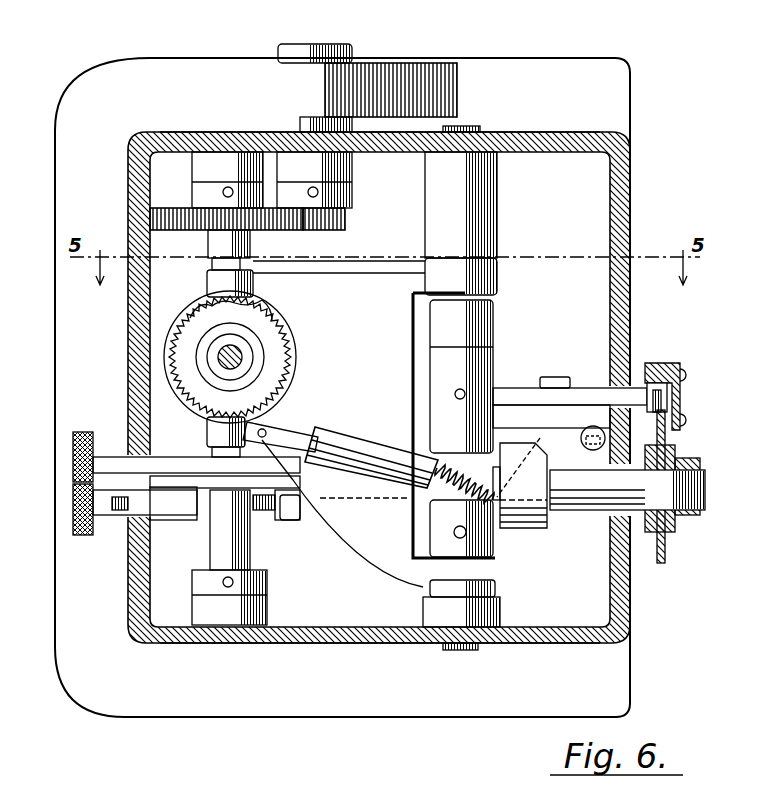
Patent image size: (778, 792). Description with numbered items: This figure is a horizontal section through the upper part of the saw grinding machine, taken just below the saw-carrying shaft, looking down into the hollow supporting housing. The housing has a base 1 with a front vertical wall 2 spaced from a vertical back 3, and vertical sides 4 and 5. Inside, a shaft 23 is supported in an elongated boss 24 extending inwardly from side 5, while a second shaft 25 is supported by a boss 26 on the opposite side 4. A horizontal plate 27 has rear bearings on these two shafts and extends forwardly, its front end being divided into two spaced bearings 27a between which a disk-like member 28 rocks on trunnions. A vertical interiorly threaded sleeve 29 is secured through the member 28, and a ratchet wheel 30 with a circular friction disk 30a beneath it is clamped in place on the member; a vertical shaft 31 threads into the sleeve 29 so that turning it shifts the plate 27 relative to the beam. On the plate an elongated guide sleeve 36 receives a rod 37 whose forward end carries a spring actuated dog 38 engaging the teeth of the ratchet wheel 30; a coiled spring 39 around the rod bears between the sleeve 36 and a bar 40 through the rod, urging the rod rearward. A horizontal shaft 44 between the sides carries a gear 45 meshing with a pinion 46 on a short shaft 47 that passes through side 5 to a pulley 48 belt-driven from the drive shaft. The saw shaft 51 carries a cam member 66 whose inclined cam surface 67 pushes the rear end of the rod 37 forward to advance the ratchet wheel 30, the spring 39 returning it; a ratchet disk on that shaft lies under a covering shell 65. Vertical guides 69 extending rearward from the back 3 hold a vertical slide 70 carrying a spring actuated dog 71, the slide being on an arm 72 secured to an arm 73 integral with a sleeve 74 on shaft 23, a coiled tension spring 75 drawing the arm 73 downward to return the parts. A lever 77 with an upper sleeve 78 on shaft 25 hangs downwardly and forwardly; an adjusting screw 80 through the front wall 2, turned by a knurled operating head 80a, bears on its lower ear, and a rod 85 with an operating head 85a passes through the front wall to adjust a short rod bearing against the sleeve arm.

The base 1 is at (55, 262).
The front vertical wall 2 is at (128, 316).
The vertical back 3 is at (632, 259).
The vertical side 4 is at (345, 645).
The vertical side 5 is at (390, 153).
The shaft 23 is at (468, 127).
The elongated boss 24 is at (500, 205).
The second shaft 25 is at (458, 651).
The boss 26 is at (500, 612).
The horizontal plate 27 is at (348, 278).
The bearings 27a is at (207, 284).
The disk-like member 28 is at (212, 300).
The vertical interiorly threaded sleeve 29 is at (258, 364).
The ratchet wheel 30 is at (270, 356).
The circular friction disk 30a is at (262, 306).
The vertical shaft 31 is at (240, 350).
The elongated guide sleeve 36 is at (345, 440).
The rod 37 is at (318, 440).
The spring actuated dog 38 is at (258, 426).
The coiled spring 39 is at (444, 470).
The bar 40 is at (485, 520).
The horizontal shaft 44 is at (250, 251).
The gear 45 is at (150, 219).
The pinion 46 is at (346, 220).
The short shaft 47 is at (318, 44).
The pulley 48 is at (400, 78).
The shaft 51 is at (590, 512).
The covering shell 65 is at (665, 556).
The cam member 66 is at (532, 528).
The inclined cam surface 67 is at (520, 462).
The vertical guides 69 is at (665, 363).
The vertical slide 70 is at (668, 390).
The spring actuated dog 71 is at (662, 402).
The arm 72 is at (584, 388).
The arm 73 is at (535, 405).
The sleeve 74 is at (493, 368).
The coiled tension spring 75 is at (590, 448).
The lever 77 is at (303, 505).
The sleeve 78 is at (440, 541).
The adjusting screw 80 is at (198, 520).
The knurled operating head 80a is at (86, 538).
The rod 85 is at (122, 457).
The operating head 85a is at (82, 432).